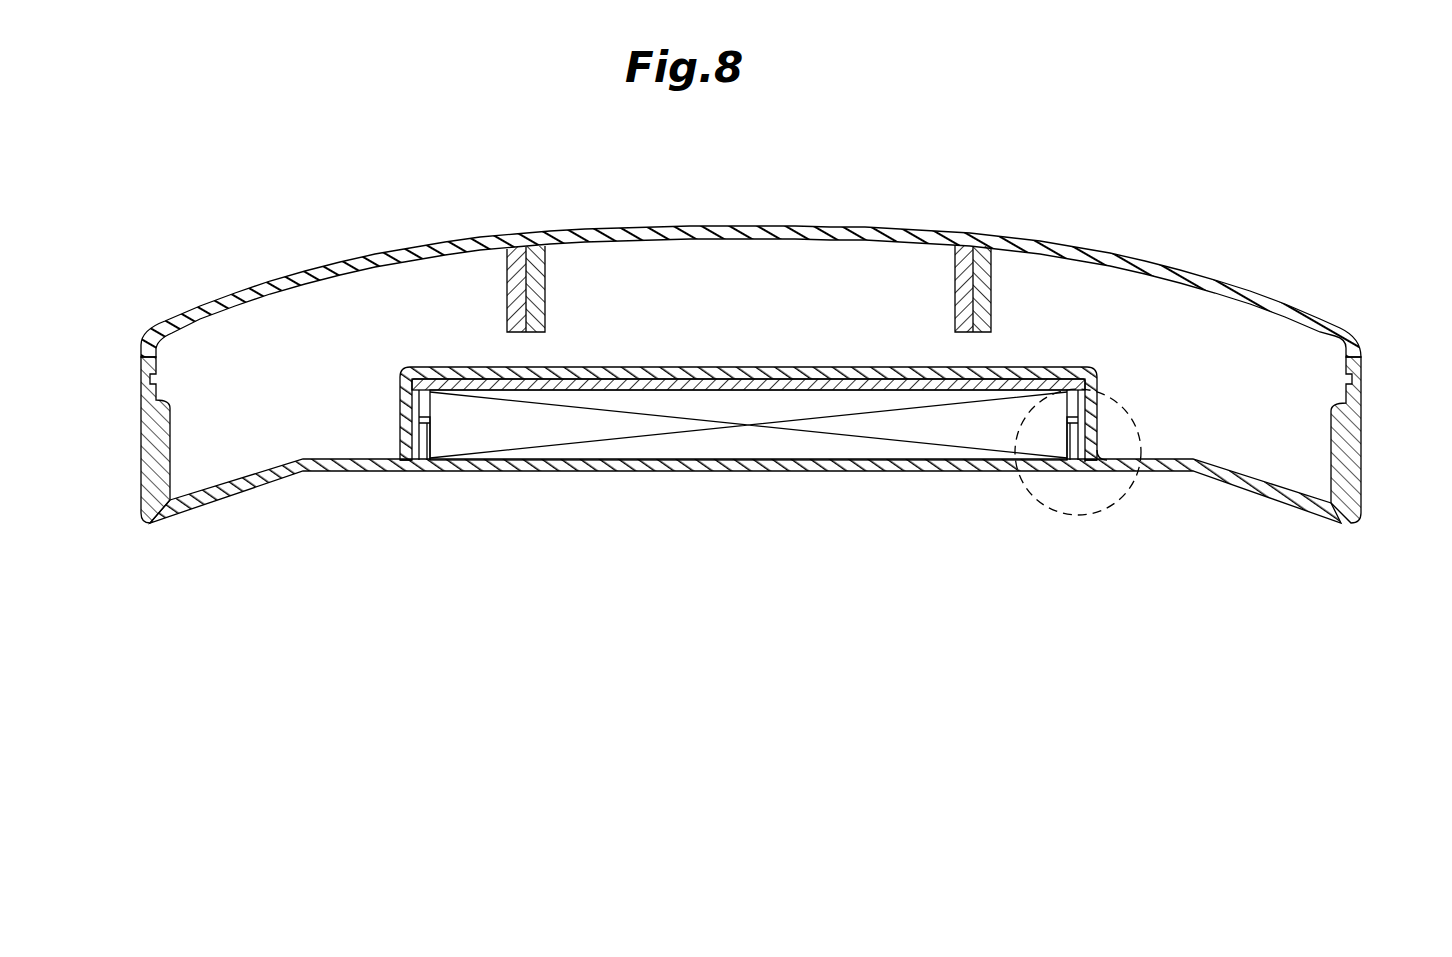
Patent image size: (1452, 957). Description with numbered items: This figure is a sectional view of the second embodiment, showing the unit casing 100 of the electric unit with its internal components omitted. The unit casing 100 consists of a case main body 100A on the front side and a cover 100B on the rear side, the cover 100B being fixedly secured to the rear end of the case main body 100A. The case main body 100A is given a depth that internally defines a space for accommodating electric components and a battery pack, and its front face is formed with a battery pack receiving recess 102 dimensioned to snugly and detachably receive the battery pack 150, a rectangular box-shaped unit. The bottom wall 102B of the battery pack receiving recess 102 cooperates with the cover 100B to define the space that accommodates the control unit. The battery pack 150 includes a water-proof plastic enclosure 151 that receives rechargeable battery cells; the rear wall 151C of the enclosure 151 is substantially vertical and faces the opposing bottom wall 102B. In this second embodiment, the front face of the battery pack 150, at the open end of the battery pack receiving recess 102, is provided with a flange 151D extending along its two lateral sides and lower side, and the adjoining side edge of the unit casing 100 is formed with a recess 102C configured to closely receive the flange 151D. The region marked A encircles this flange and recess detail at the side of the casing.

The unit casing 100 is at (1306, 276).
The case main body 100A is at (1362, 457).
The cover 100B is at (1077, 243).
The battery pack receiving recess 102 is at (430, 412).
The bottom wall 102B is at (722, 392).
The recess 102C is at (413, 474).
The battery pack 150 is at (849, 436).
The enclosure 151 is at (655, 472).
The rear wall 151C is at (814, 372).
The flange 151D is at (1075, 472).
The detail region A is at (1078, 516).